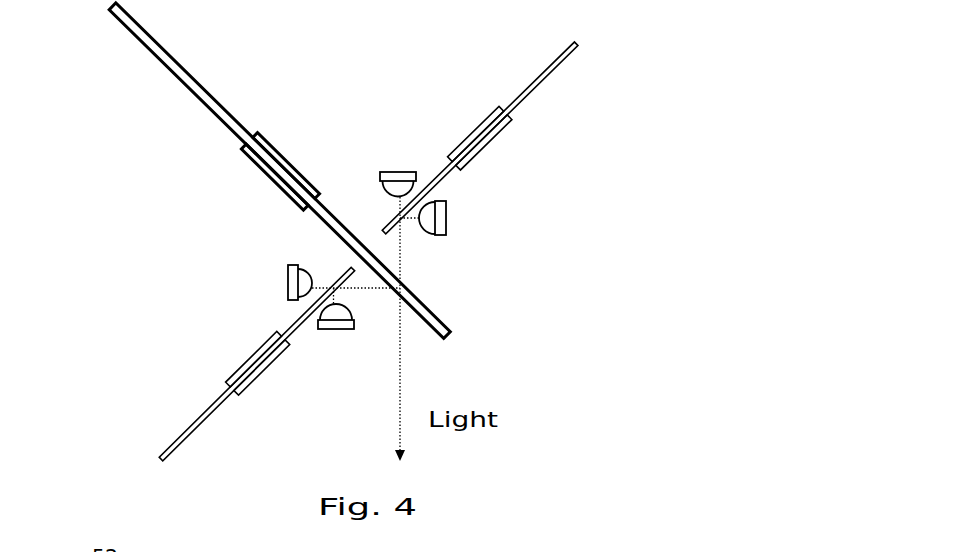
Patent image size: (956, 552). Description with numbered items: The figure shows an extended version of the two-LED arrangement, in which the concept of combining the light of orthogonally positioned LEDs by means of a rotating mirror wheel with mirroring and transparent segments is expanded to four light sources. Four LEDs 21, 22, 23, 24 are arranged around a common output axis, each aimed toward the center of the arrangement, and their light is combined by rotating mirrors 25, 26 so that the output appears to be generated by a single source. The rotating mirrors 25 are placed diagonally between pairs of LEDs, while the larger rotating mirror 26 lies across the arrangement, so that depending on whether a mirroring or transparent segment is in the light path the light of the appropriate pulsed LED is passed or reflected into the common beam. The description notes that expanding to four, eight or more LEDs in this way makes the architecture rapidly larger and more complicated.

The LED 21 is at (398, 172).
The LED 22 is at (446, 218).
The LED 23 is at (329, 330).
The LED 24 is at (288, 283).
The rotating mirror 25 is at (547, 80).
The rotating mirror 26 is at (193, 97).